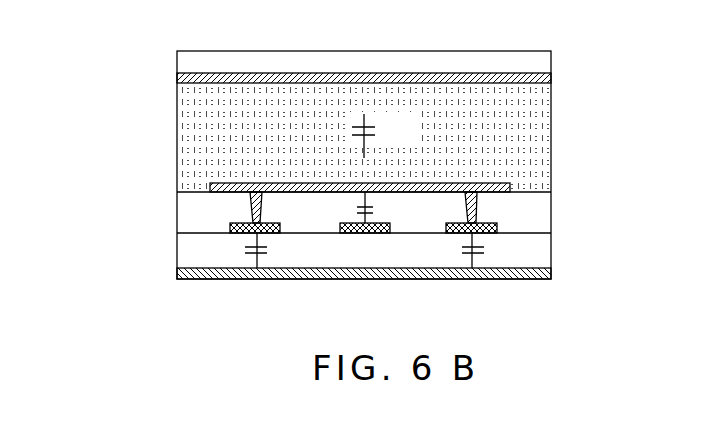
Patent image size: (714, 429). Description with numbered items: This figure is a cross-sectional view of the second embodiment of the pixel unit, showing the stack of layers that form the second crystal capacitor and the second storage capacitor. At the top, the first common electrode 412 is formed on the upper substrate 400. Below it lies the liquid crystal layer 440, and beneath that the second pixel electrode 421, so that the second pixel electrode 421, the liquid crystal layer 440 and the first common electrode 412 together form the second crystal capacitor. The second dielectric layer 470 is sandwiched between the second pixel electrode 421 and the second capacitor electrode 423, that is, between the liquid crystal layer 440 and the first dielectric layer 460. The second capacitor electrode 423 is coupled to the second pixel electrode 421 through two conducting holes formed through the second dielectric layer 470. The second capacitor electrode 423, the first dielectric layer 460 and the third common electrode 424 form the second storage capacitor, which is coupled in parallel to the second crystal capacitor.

The upper substrate 400 is at (546, 63).
The first common electrode 412 is at (177, 78).
The liquid crystal layer 440 is at (546, 133).
The second pixel electrode 421 is at (210, 187).
The second dielectric layer 470 is at (551, 211).
The second capacitor electrode 423 is at (230, 227).
The first dielectric layer 460 is at (551, 258).
The third common electrode 424 is at (177, 273).